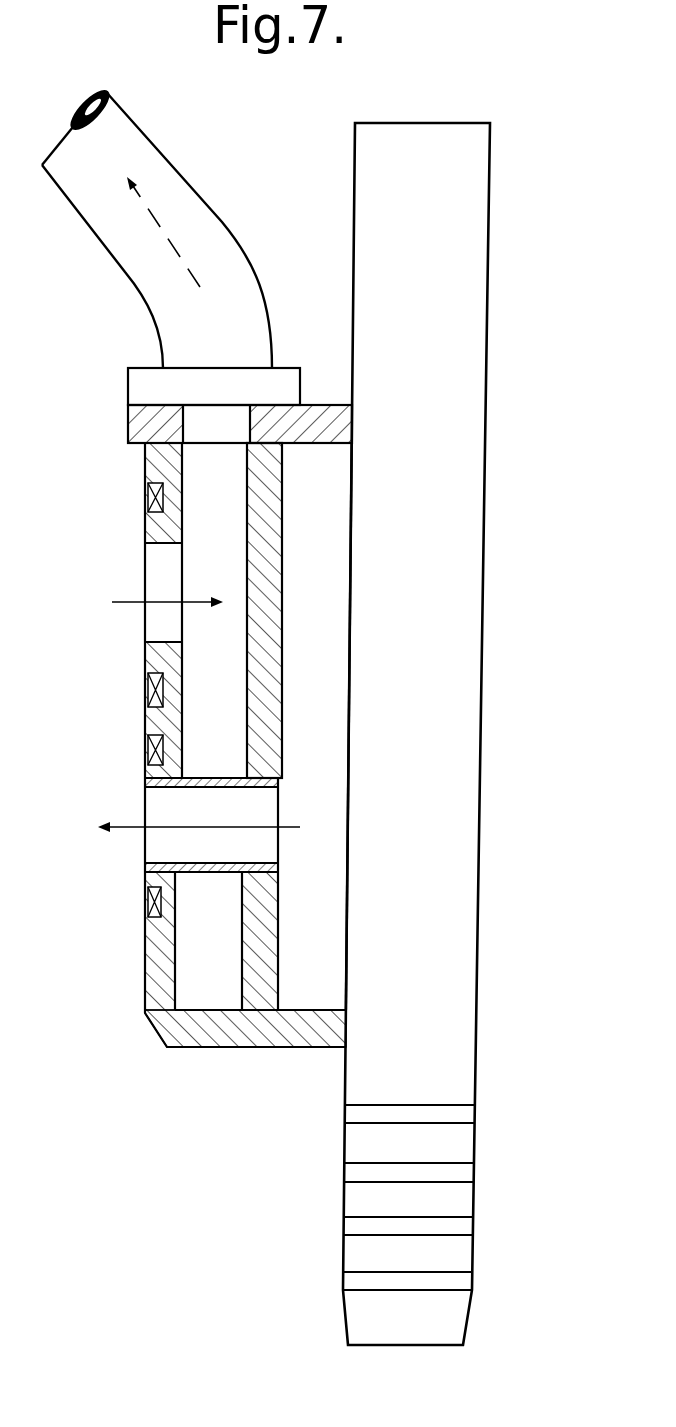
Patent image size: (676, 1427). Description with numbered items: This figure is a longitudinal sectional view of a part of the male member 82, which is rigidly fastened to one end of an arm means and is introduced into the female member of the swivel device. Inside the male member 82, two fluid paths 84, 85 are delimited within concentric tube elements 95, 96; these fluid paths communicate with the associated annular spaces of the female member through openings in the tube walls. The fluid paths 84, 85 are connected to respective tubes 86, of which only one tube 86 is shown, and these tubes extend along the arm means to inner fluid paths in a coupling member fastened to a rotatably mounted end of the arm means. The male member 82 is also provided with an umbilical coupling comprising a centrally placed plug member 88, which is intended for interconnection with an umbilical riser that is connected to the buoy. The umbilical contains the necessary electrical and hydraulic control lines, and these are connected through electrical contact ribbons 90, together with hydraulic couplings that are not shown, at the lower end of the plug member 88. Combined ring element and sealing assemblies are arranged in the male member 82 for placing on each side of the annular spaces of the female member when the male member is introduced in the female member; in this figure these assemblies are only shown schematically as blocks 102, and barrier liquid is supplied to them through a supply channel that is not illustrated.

The male member 82 is at (204, 1065).
The fluid path 84 is at (193, 565).
The fluid path 85 is at (317, 710).
The tube 86 is at (227, 257).
The plug member 88 is at (457, 768).
The electrical contact ribbons 90 is at (463, 1227).
The concentric tube element 95 is at (150, 527).
The concentric tube element 96 is at (265, 632).
The combined ring element and sealing assemblies 102 is at (142, 690).